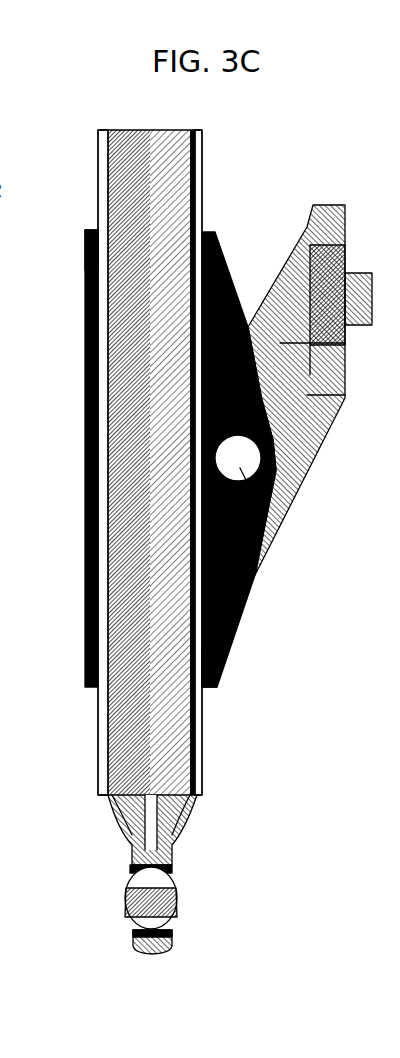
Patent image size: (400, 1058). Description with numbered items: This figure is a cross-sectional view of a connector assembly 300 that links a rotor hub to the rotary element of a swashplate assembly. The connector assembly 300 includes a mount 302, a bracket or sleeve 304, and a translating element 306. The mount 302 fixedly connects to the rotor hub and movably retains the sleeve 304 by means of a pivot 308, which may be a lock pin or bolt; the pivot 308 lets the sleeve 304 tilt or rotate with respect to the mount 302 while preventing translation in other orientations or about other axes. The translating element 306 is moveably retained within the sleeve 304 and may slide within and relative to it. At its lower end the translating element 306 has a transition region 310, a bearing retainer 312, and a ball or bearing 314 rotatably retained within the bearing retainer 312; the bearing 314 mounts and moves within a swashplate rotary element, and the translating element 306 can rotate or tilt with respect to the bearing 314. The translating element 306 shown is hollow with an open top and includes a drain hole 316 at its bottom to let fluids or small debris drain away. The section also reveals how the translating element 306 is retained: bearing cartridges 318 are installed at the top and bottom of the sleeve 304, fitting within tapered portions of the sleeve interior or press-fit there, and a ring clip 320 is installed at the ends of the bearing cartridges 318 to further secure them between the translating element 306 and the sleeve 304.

The connector assembly 300 is at (302, 160).
The mount 302 is at (315, 418).
The sleeve 304 is at (85, 444).
The translating element 306 is at (200, 181).
The pivot 308 is at (265, 513).
The transition region 310 is at (140, 832).
The bearing retainer 312 is at (140, 943).
The bearing 314 is at (170, 907).
The drain hole 316 is at (157, 785).
The bearing cartridges 318 is at (203, 288).
The ring clip 320 is at (96, 232).